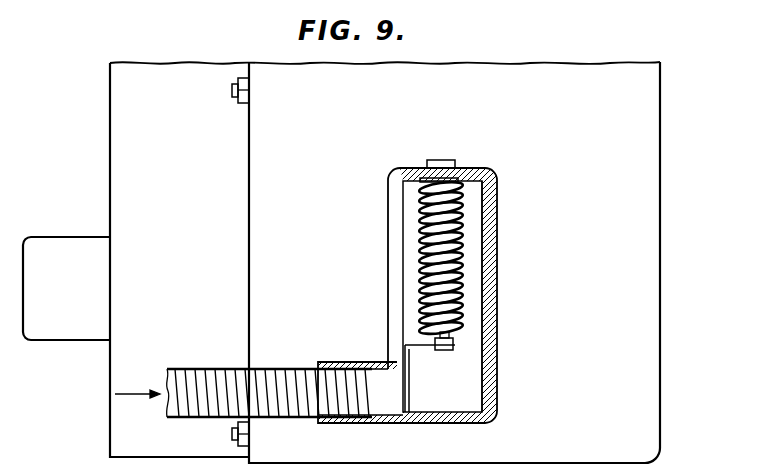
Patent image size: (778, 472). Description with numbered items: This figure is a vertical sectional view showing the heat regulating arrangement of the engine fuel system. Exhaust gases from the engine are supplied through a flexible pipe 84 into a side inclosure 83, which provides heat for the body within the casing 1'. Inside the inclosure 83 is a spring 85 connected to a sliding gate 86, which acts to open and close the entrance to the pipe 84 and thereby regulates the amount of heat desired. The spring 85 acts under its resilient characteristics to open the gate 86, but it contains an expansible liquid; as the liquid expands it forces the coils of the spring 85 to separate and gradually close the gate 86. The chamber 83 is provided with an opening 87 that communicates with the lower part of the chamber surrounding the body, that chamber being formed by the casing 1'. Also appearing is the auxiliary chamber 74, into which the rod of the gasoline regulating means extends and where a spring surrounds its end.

The casing 1' is at (385, 262).
The auxiliary chamber 74 is at (67, 330).
The side inclosure 83 is at (497, 360).
The flexible pipe 84 is at (210, 400).
The spring 85 is at (462, 253).
The sliding gate 86 is at (397, 350).
The opening 87 is at (480, 338).